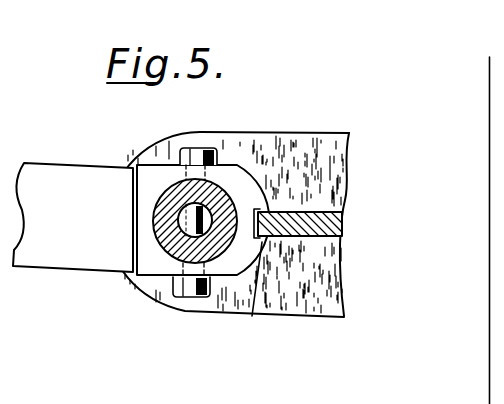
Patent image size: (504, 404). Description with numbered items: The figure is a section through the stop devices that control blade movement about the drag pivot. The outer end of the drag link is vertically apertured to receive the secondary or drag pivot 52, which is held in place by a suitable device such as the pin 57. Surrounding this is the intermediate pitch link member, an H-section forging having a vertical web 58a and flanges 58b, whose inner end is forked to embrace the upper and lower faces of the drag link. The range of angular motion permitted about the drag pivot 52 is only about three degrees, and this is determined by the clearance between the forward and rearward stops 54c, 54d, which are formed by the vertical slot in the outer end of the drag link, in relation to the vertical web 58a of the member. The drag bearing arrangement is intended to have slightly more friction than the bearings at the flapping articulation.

The flanges 58b is at (233, 143).
The web 58a is at (347, 220).
The rearward stop 54d is at (271, 211).
The forward stop 54c is at (252, 316).
The pin 57 is at (183, 218).
The drag pivot 52 is at (160, 232).